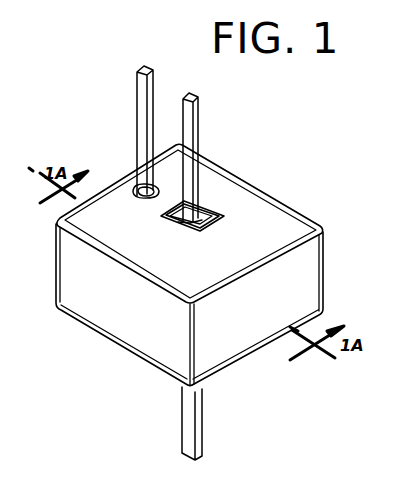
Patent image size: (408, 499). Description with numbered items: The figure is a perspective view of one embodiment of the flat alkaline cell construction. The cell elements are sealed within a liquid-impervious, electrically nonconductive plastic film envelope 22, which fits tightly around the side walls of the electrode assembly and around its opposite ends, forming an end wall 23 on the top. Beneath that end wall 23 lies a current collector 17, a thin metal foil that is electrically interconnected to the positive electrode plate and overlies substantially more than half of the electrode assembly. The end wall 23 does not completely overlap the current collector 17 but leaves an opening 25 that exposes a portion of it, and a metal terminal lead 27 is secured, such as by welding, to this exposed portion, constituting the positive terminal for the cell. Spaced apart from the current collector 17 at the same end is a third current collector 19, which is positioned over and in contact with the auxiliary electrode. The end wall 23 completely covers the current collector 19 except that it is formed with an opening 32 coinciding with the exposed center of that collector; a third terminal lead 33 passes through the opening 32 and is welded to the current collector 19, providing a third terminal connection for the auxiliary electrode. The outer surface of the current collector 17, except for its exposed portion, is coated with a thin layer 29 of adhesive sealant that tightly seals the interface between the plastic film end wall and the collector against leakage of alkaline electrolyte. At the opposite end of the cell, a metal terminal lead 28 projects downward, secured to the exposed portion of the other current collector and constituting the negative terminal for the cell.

The current collector 17 is at (192, 225).
The third current collector 19 is at (146, 194).
The plastic film envelope 22 is at (310, 264).
The end wall 23 is at (270, 204).
The opening 25 is at (220, 229).
The metal terminal lead 27 is at (199, 128).
The metal terminal lead 28 is at (201, 432).
The layer of adhesive sealant 29 is at (180, 222).
The opening 32 is at (142, 184).
The third terminal lead 33 is at (153, 88).